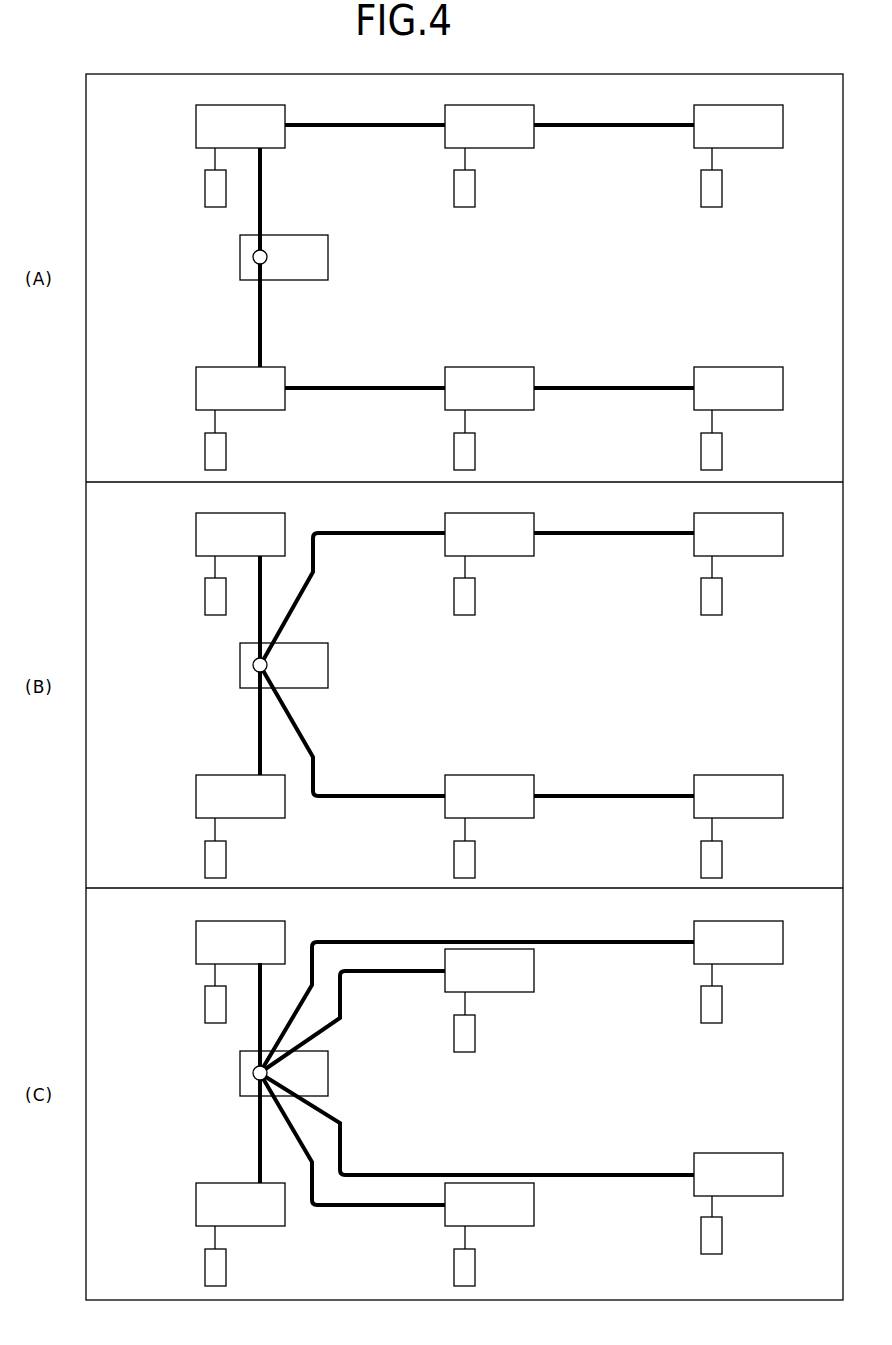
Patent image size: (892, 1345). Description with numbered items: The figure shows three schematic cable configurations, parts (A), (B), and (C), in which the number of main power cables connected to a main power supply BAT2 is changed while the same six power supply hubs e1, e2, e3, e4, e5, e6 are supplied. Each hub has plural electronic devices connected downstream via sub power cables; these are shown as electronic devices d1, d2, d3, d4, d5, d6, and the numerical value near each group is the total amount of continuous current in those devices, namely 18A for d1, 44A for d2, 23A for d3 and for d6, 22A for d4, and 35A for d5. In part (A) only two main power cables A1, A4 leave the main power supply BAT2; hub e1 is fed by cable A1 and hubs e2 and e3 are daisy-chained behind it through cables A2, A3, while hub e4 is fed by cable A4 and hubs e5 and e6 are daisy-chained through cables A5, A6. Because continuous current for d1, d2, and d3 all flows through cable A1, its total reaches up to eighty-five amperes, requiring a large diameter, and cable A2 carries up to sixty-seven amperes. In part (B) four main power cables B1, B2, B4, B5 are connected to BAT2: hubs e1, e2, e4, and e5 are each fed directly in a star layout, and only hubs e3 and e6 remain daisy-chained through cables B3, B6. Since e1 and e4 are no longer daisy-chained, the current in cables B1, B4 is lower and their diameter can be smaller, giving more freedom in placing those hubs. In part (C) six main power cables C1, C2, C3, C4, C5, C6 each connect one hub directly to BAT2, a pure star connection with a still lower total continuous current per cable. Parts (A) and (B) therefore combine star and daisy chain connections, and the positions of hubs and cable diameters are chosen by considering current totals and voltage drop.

The power supply hub e1 is at (196, 108).
The power supply hub e2 is at (445, 108).
The power supply hub e3 is at (694, 108).
The power supply hub e4 is at (196, 370).
The power supply hub e5 is at (445, 370).
The power supply hub e6 is at (694, 370).
The electronic devices d1 is at (205, 187).
The electronic devices d2 is at (454, 187).
The electronic devices d3 is at (701, 187).
The electronic devices d4 is at (205, 447).
The electronic devices d5 is at (454, 447).
The electronic devices d6 is at (701, 447).
The total amount of continuous current 18A is at (165, 618).
The total amount of continuous current 44A is at (413, 631).
The total amount of continuous current 23A is at (660, 732).
The total amount of continuous current 22A is at (165, 878).
The total amount of continuous current 35A is at (413, 878).
The main power supply BAT2 is at (328, 262).
The main power cable A1 is at (262, 218).
The main power cable A2 is at (302, 128).
The main power cable A3 is at (553, 128).
The main power cable A4 is at (262, 345).
The main power cable A5 is at (302, 391).
The main power cable A6 is at (553, 391).
The main power cable B1 is at (258, 620).
The main power cable B2 is at (350, 536).
The main power cable B3 is at (553, 536).
The main power cable B4 is at (258, 700).
The main power cable B5 is at (350, 799).
The main power cable B6 is at (553, 799).
The main power cable C1 is at (258, 1027).
The main power cable C2 is at (353, 974).
The main power cable C3 is at (553, 944).
The main power cable C4 is at (258, 1109).
The main power cable C5 is at (350, 1208).
The main power cable C6 is at (553, 1178).